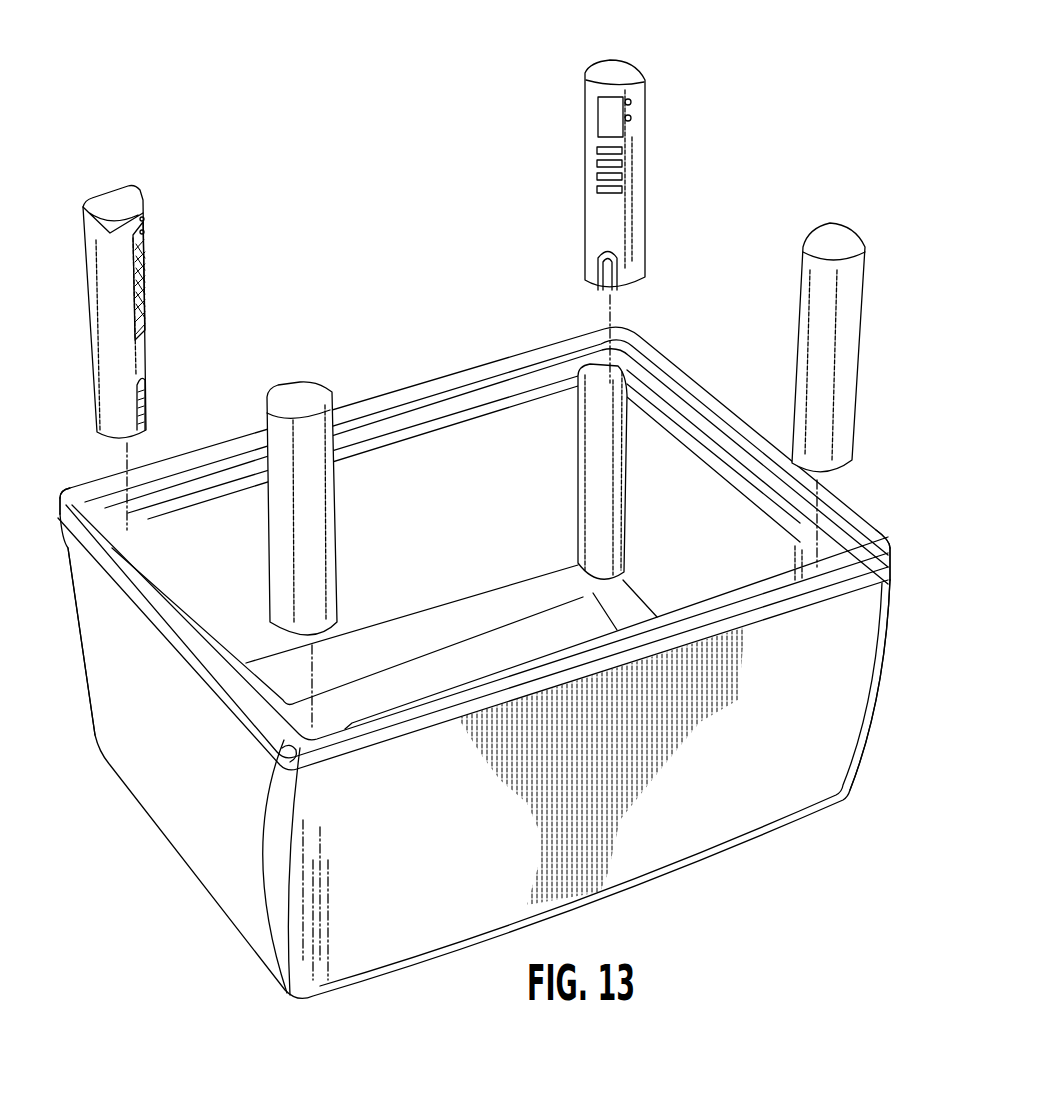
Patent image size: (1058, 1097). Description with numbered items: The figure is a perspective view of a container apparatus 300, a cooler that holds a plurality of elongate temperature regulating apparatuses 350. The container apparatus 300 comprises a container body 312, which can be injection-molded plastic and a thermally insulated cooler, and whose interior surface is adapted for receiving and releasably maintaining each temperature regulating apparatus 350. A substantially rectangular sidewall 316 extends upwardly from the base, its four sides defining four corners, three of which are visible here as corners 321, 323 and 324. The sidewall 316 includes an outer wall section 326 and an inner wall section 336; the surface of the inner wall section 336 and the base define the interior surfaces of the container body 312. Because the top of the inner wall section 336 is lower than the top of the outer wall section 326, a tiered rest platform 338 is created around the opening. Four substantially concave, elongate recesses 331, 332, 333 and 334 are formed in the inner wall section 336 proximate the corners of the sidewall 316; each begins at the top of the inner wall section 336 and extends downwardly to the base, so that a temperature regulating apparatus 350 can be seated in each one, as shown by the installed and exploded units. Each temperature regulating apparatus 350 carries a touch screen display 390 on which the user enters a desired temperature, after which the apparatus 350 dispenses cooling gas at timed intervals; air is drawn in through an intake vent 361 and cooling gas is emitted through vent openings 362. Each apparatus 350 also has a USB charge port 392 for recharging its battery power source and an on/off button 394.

The container apparatus 300 is at (475, 503).
The container body 312 is at (850, 810).
The sidewall 316 is at (700, 787).
The corner 321 is at (60, 520).
The corner 323 is at (880, 551).
The corner 324 is at (268, 855).
The outer wall section 326 is at (113, 707).
The recess 331 is at (115, 530).
The recess 332 is at (603, 440).
The recess 333 is at (827, 562).
The recess 334 is at (296, 746).
The inner wall section 336 is at (467, 455).
The tiered rest platform 338 is at (178, 602).
The temperature regulating apparatus 350 is at (107, 312).
The intake vent 361 is at (602, 277).
The vent openings 362 is at (597, 189).
The touch screen display 390 is at (610, 120).
The USB charge port 392 is at (631, 118).
The on/off button 394 is at (631, 102).